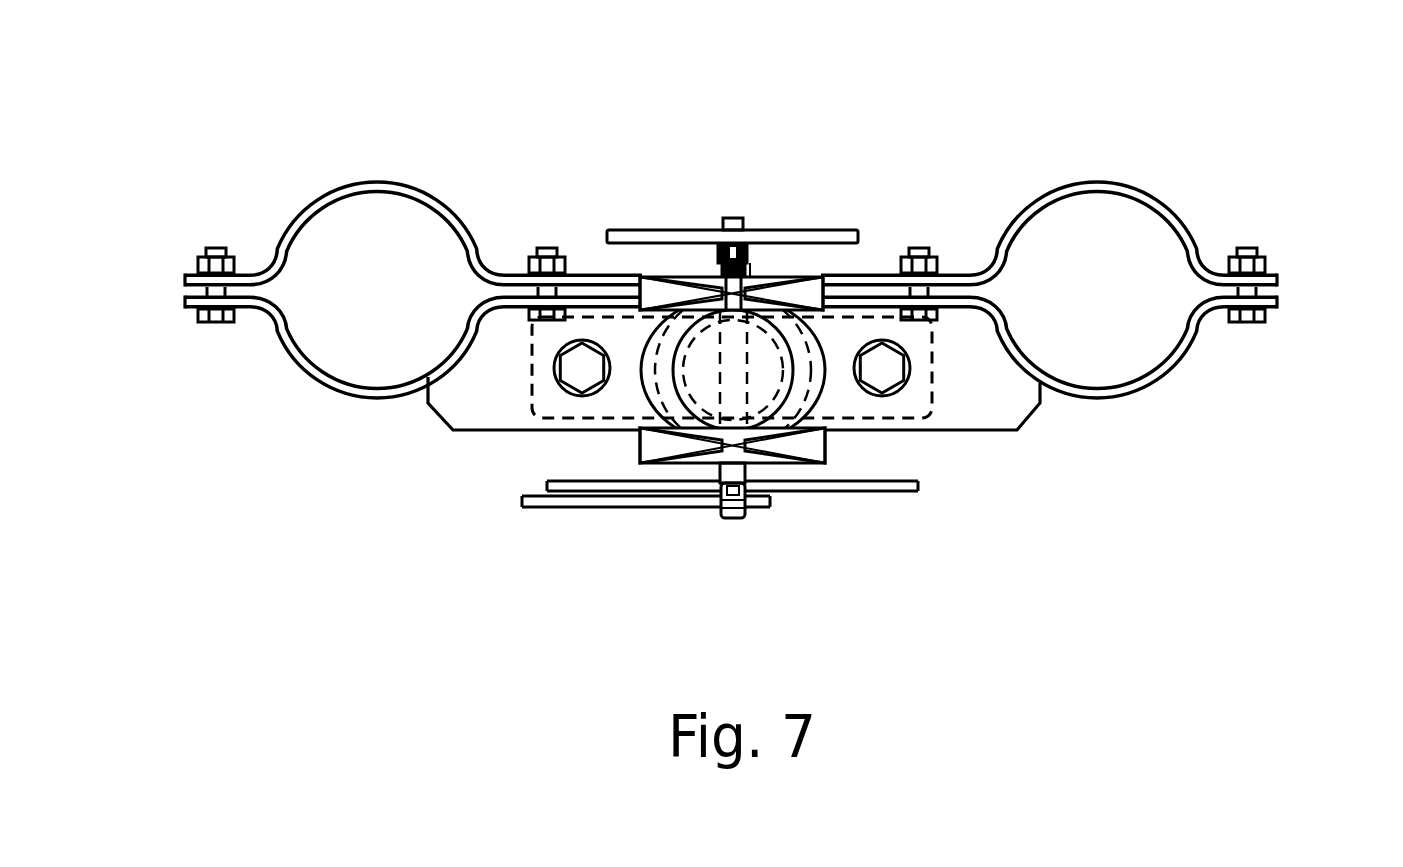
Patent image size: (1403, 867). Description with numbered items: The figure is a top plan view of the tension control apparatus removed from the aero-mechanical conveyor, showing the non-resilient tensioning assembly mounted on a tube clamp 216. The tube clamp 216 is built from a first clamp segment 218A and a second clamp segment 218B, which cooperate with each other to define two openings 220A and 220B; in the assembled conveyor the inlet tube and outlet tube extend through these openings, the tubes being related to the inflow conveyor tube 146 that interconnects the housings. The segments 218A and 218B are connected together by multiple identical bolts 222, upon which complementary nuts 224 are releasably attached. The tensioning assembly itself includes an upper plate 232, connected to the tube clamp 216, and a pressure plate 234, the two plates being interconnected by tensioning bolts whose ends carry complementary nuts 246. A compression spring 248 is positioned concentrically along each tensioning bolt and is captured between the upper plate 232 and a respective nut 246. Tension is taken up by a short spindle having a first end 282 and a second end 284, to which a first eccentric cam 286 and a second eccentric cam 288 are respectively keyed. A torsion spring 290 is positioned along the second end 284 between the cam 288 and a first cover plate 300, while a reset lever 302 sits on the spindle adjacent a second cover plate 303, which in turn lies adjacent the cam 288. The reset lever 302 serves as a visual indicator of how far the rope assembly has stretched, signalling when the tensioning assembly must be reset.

The inflow conveyor tube 146 is at (572, 393).
The tube clamp 216 is at (1195, 250).
The first clamp segment 218A is at (1213, 332).
The second clamp segment 218B is at (252, 270).
The opening 220A is at (1103, 203).
The opening 220B is at (392, 198).
The bolt 222 is at (490, 290).
The nut 224 is at (197, 262).
The upper plate 232 is at (428, 385).
The pressure plate 234 is at (532, 379).
The nut 246 is at (912, 366).
The spring 248 is at (912, 388).
The first end of spindle 282 is at (858, 461).
The second end of spindle 284 is at (733, 218).
The first eccentric cam 286 is at (824, 446).
The second eccentric cam 288 is at (675, 277).
The torsion spring 290 is at (750, 253).
The first cover plate 300 is at (822, 230).
The reset lever 302 is at (538, 508).
The second cover plate 303 is at (846, 492).